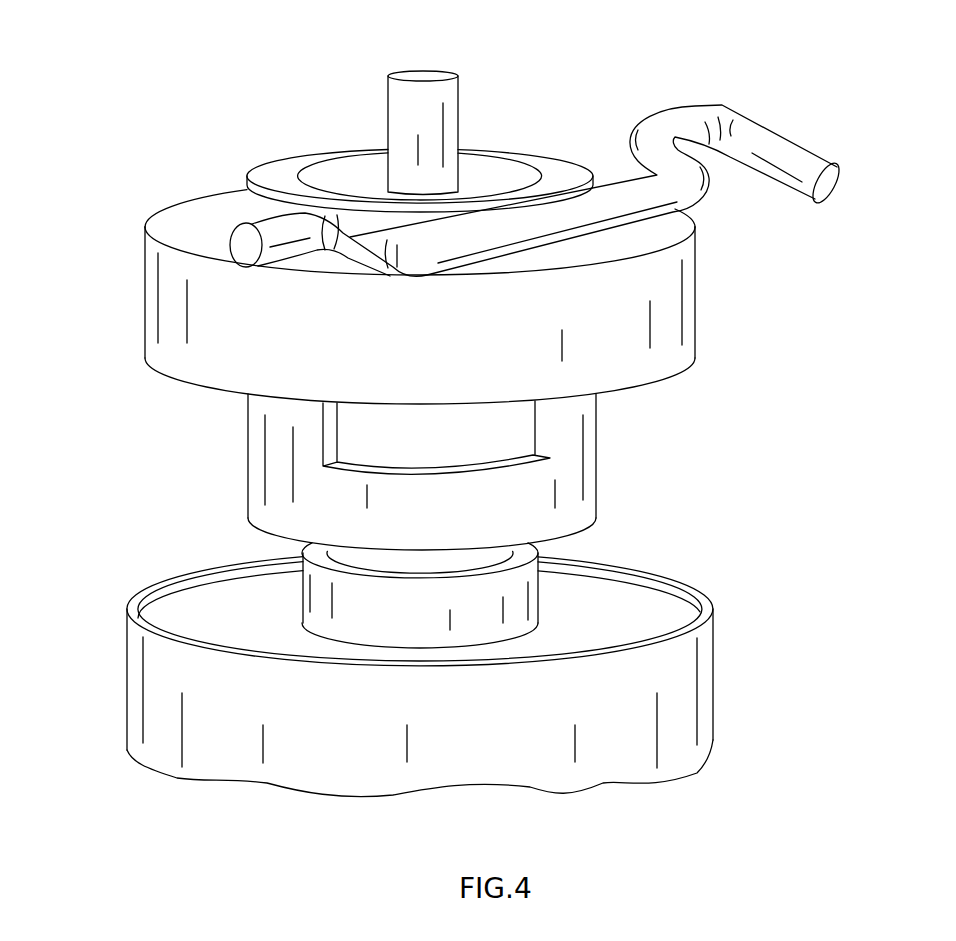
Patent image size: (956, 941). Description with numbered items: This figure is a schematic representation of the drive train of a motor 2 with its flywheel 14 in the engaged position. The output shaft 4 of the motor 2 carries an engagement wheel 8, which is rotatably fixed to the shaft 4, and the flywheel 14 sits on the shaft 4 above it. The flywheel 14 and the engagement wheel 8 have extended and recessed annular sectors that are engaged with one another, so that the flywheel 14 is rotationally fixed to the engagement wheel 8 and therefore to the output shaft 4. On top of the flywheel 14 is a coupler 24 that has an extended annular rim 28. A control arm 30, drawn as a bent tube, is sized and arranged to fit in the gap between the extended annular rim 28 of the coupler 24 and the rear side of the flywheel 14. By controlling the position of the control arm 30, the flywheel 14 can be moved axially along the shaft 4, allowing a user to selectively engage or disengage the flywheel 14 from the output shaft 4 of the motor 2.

The motor 2 is at (182, 715).
The output shaft 4 is at (443, 102).
The engagement wheel 8 is at (270, 482).
The flywheel 14 is at (425, 354).
The coupler 24 is at (228, 174).
The extended annular rim 28 is at (283, 165).
The control arm 30 is at (243, 242).